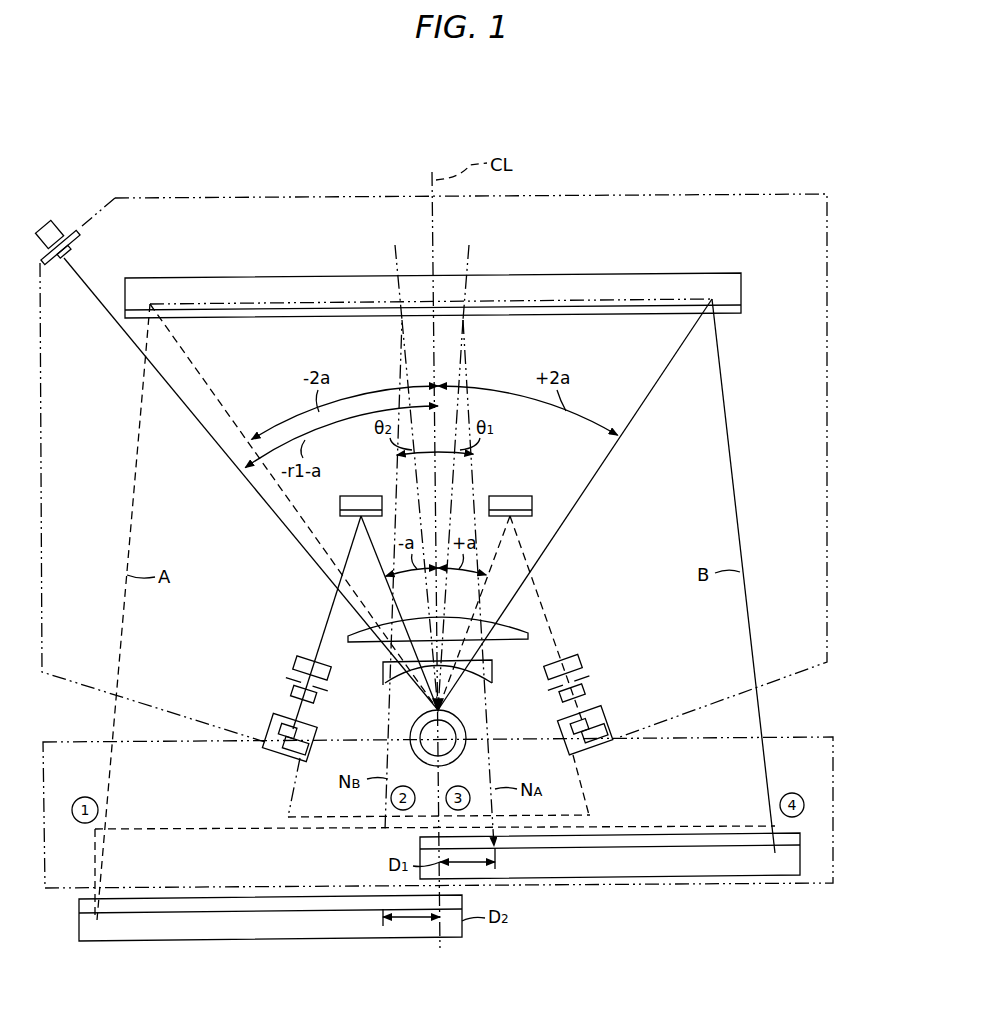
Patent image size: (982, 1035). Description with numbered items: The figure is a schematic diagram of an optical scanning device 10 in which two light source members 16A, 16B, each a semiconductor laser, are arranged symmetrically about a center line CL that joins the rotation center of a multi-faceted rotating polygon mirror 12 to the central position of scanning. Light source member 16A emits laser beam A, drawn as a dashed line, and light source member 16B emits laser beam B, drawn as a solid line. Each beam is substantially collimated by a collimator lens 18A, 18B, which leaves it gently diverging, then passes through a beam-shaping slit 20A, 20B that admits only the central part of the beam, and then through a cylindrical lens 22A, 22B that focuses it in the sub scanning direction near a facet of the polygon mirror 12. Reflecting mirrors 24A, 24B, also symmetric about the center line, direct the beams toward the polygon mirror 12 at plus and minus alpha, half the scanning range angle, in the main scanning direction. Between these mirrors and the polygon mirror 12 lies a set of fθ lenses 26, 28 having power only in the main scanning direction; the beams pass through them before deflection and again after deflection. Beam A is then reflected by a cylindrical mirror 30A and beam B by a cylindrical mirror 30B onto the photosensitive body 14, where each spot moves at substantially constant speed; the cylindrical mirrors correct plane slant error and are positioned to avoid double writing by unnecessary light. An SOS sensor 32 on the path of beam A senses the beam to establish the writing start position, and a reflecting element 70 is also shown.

The optical measuring apparatus 10 is at (834, 231).
The multi-faceted rotating polygon mirror 12 is at (466, 750).
The photosensitive body 14 is at (833, 781).
The light source member 16A is at (598, 743).
The light source member 16B is at (287, 746).
The collimator lens 18A is at (590, 690).
The collimator lens 18B is at (290, 693).
The beam-shaping slit 20A is at (592, 672).
The beam-shaping slit 20B is at (290, 680).
The cylindrical lens 22A is at (588, 657).
The cylindrical lens 22B is at (290, 659).
The reflecting mirror 24A is at (511, 496).
The reflecting mirror 24B is at (362, 496).
The fθ lens 26 is at (492, 670).
The fθ lens 28 is at (530, 637).
The cylindrical mirror 30A is at (112, 942).
The cylindrical mirror 30B is at (800, 862).
The SOS sensor 32 is at (51, 230).
The reflecting plate 70 is at (741, 294).